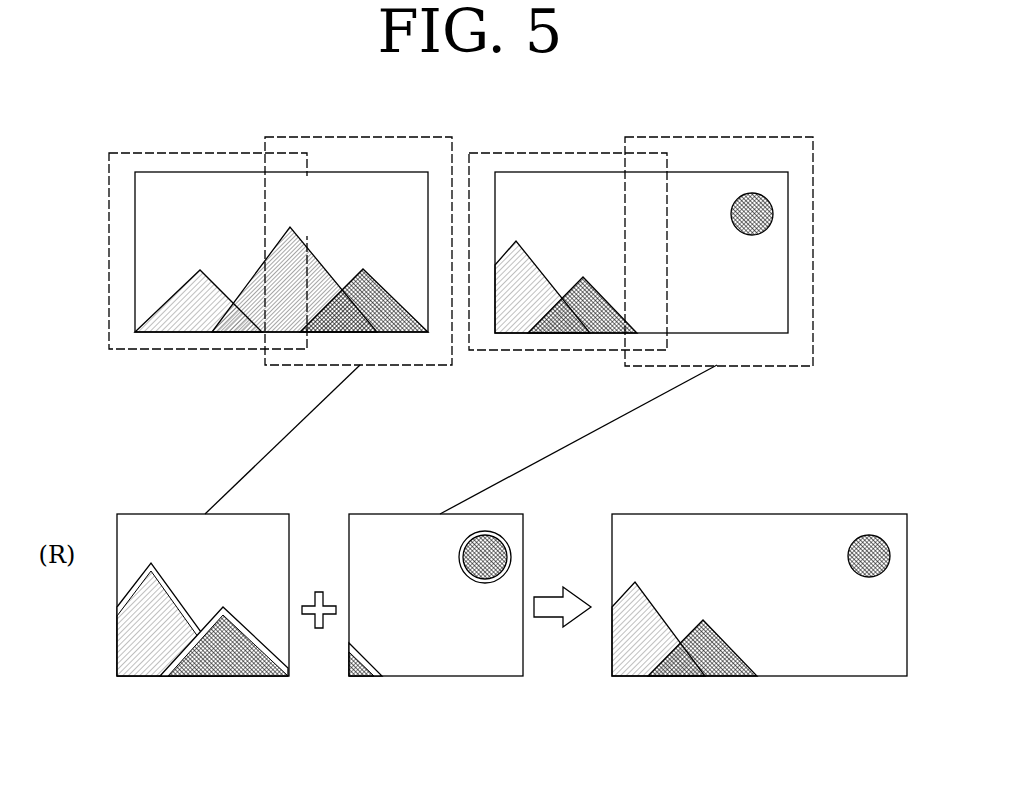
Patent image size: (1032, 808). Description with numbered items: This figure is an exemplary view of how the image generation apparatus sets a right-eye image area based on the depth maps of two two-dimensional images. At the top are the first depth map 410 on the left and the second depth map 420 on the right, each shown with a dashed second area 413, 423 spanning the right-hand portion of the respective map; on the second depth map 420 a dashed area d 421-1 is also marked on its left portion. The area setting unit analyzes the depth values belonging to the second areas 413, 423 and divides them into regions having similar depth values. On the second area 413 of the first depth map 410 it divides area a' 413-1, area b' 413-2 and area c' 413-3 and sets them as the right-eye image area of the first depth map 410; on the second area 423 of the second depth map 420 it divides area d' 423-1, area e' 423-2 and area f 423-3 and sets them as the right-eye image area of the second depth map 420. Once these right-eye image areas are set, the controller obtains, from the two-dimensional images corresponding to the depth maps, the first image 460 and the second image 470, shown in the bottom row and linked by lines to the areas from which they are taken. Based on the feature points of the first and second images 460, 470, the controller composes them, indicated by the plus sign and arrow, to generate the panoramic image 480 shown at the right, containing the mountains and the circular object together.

The first depth map 410 is at (244, 250).
The second area 413 is at (333, 137).
The area a' 413-1 is at (409, 180).
The area b' 413-2 is at (280, 332).
The area c' 413-3 is at (395, 334).
The second depth map 420 is at (691, 289).
The area d 421-1 is at (567, 190).
The second area 423 is at (742, 137).
The area d' 423-1 is at (765, 300).
The area e' 423-2 is at (632, 338).
The area f 423-3 is at (773, 210).
The first image 460 is at (203, 676).
The second image 470 is at (440, 676).
The panoramic image 480 is at (757, 676).